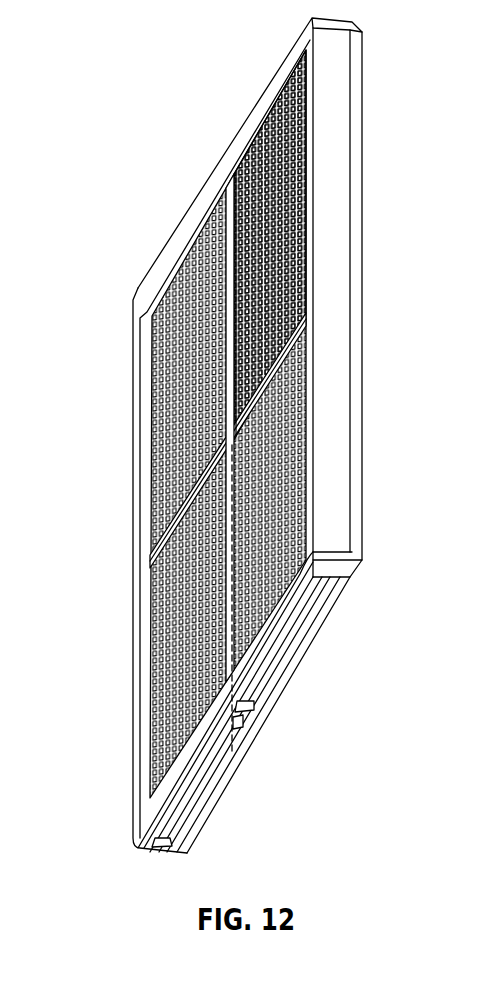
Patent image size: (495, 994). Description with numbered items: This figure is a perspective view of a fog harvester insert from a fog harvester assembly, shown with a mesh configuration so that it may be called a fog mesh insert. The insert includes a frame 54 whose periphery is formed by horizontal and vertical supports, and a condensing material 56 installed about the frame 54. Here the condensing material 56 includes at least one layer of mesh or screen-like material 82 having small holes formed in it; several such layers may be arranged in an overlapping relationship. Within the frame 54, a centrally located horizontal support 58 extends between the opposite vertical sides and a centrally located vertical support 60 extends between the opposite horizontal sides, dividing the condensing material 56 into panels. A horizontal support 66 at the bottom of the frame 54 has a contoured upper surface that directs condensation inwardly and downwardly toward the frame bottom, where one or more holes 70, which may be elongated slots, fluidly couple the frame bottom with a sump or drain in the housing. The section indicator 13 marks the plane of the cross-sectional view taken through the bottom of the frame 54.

The section line 13- 13 is at (236, 443).
The frame 54 is at (340, 65).
The condensing material 56 is at (178, 378).
The centrally located horizontal support 58 is at (168, 523).
The centrally located vertical support 60 is at (230, 178).
The horizontal support 66 is at (152, 782).
The hole 70 is at (220, 762).
The screen-like material 82 is at (286, 166).